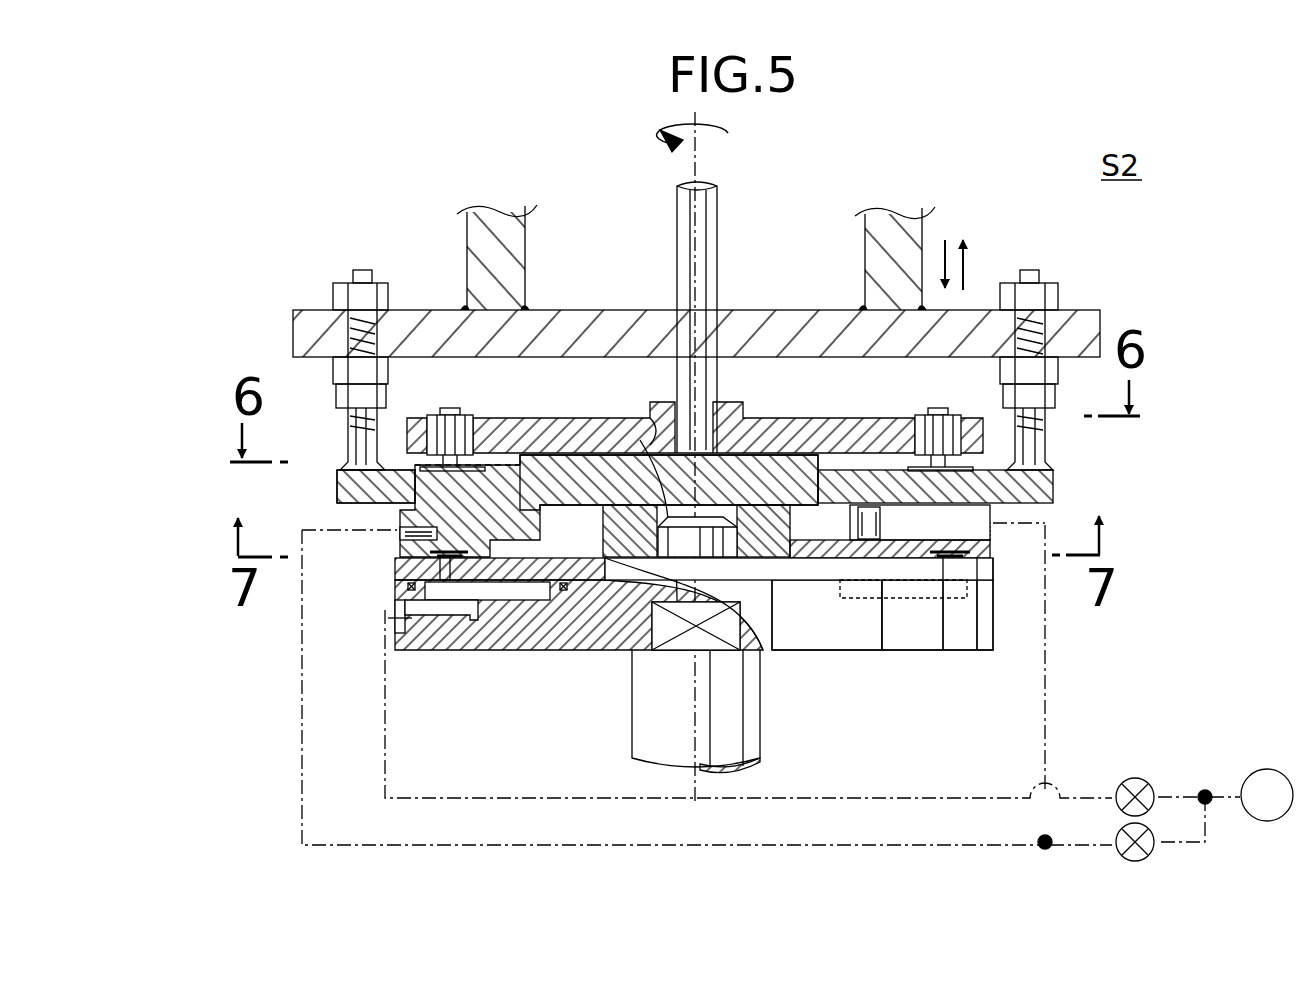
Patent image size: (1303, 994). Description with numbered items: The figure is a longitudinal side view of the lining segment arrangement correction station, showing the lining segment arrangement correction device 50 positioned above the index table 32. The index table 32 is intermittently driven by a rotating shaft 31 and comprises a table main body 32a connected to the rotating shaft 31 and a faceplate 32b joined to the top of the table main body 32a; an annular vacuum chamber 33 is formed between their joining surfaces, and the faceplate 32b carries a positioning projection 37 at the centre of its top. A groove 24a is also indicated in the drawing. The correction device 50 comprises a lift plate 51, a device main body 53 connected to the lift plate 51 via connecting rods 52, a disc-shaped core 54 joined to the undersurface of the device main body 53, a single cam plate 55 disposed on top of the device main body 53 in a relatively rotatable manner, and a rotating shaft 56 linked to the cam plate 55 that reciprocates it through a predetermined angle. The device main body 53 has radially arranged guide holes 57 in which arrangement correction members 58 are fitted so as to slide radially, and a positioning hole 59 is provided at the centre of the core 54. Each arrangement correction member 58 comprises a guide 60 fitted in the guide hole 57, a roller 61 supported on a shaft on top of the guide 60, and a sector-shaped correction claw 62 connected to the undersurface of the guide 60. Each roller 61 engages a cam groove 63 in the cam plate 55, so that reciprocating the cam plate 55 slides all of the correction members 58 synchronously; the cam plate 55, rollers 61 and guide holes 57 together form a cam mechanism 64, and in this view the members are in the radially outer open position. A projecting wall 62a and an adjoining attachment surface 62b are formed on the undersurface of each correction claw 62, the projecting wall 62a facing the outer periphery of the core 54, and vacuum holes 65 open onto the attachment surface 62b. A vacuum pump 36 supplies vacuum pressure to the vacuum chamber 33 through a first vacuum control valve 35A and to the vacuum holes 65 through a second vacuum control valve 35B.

The lining segment arrangement correction device 50 is at (1073, 282).
The lift plate 51 is at (608, 318).
The connecting rod 52 is at (357, 447).
The device main body 53 is at (1050, 487).
The core 54 is at (842, 560).
The cam plate 55 is at (796, 422).
The rotating shaft 56 is at (717, 240).
The guide hole 57 is at (547, 472).
The arrangement correction member 58 is at (490, 466).
The positioning hole 59 is at (655, 642).
The guide 60 is at (380, 478).
The roller 61 is at (700, 418).
The correction claw 62 is at (697, 609).
The projecting wall 62a is at (420, 565).
The attachment surface 62b is at (934, 568).
The cam groove 63 is at (462, 440).
The cam mechanism 64 is at (930, 386).
The vacuum hole 65 is at (420, 532).
The groove 24a is at (473, 600).
The rotating shaft 31 is at (748, 712).
The index table 32 is at (771, 686).
The table main body 32a is at (910, 652).
The faceplate 32b is at (890, 722).
The vacuum chamber 33 is at (680, 625).
The first vacuum control valve 35A is at (1138, 778).
The second vacuum control valve 35B is at (1137, 862).
The vacuum pump 36 is at (1268, 769).
The positioning projection 37 is at (648, 460).